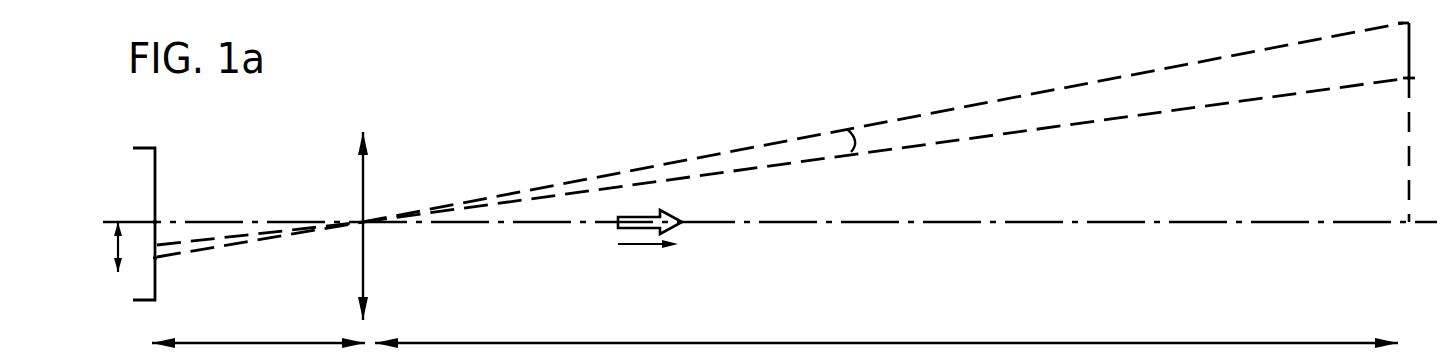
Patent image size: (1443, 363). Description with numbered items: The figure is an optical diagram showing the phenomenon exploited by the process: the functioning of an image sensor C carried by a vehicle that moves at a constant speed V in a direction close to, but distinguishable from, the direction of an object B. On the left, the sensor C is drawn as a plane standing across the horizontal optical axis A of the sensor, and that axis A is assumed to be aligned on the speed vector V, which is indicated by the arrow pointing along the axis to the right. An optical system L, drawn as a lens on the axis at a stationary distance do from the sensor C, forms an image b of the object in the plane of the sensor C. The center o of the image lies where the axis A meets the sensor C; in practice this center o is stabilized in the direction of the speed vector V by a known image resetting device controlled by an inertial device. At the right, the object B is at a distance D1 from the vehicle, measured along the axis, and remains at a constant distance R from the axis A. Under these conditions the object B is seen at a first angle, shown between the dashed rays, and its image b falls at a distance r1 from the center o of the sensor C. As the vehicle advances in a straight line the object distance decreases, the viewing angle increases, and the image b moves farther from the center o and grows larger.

The optical axis A is at (1268, 222).
The image sensor C is at (144, 209).
The center of the image o is at (155, 221).
The image of the object b is at (155, 258).
The distance of image from center r1 is at (106, 247).
The optical system L is at (360, 208).
The speed V is at (650, 246).
The object B is at (1414, 43).
The distance relative to axis R is at (1420, 150).
The distance between optical system and sensor do is at (258, 330).
The distance of object from vehicle D1 is at (886, 328).